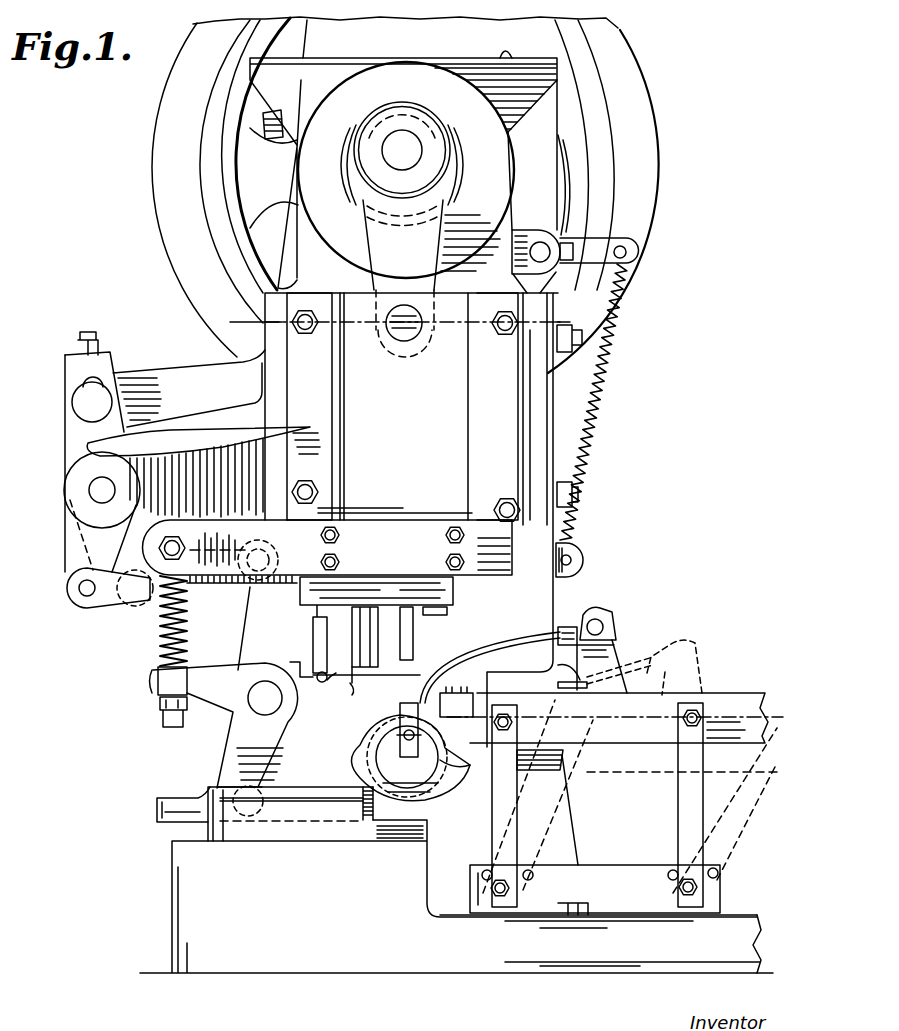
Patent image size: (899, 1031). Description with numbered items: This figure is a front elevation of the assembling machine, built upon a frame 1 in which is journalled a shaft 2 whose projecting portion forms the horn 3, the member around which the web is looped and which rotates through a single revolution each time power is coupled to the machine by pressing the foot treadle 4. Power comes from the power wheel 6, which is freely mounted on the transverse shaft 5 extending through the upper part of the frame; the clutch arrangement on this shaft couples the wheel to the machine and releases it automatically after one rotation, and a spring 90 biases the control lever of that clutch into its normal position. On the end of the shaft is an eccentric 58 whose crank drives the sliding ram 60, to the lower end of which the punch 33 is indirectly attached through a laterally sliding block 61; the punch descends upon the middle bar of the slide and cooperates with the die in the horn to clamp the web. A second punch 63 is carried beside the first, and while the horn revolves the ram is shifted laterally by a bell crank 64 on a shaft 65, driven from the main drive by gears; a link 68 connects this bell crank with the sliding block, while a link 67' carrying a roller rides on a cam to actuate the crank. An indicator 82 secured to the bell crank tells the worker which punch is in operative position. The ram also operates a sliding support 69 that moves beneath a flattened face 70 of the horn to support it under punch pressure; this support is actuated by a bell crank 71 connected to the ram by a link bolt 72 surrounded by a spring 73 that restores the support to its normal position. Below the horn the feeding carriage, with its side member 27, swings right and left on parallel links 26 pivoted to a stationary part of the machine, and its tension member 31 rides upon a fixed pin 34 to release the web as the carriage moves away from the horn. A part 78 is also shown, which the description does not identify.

The frame 1 is at (360, 248).
The shaft 2 is at (320, 429).
The horn 3 is at (385, 742).
The foot treadle 4 is at (242, 315).
The shaft 5 is at (453, 173).
The power wheel 6 is at (152, 170).
The parallel links 26 is at (494, 832).
The side member 27 is at (634, 738).
The tension member 31 is at (532, 643).
The punch 33 is at (413, 635).
The fixed pin 34 is at (572, 677).
The eccentric 58 is at (352, 136).
The sliding ram 60 is at (458, 410).
The laterally sliding block 61 is at (366, 535).
The second punch 63 is at (356, 680).
The bell crank 64 is at (74, 546).
The shaft 65 is at (89, 490).
The link 67' is at (165, 382).
The link 68 is at (135, 612).
The sliding support 69 is at (155, 820).
The flattened face 70 is at (410, 783).
The bell crank 71 is at (226, 681).
The link bolt 72 is at (157, 653).
The spring 73 is at (188, 628).
The pivot pin 78 is at (333, 682).
The indicator 82 is at (198, 430).
The spring 90 is at (598, 391).